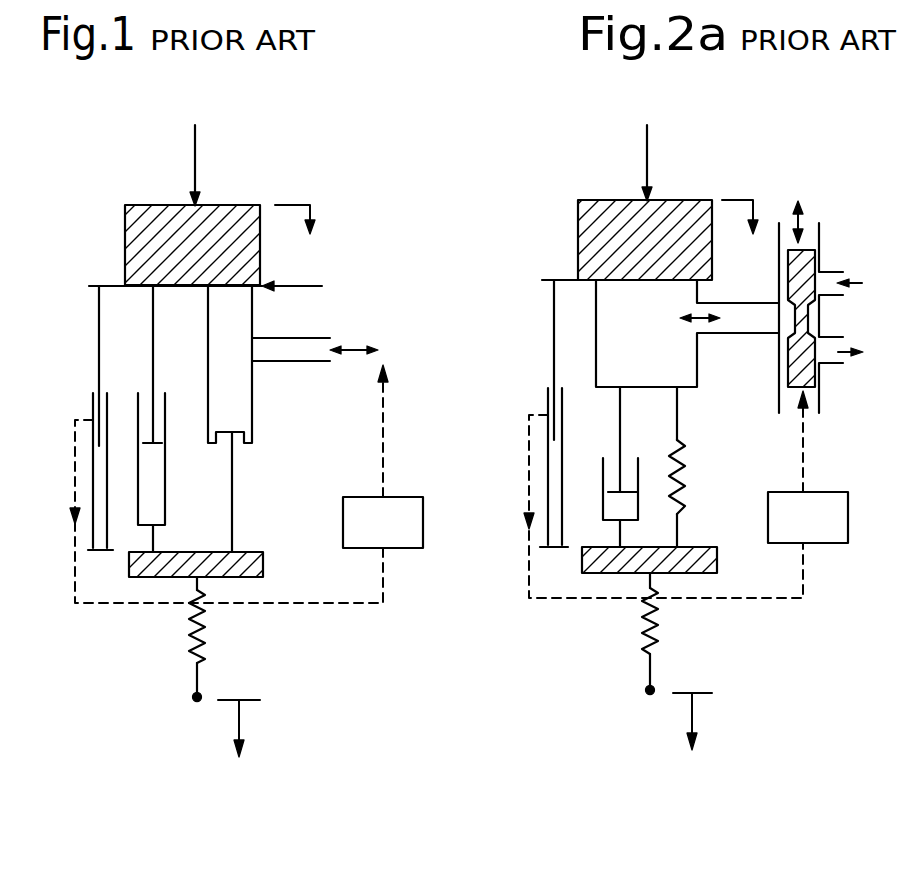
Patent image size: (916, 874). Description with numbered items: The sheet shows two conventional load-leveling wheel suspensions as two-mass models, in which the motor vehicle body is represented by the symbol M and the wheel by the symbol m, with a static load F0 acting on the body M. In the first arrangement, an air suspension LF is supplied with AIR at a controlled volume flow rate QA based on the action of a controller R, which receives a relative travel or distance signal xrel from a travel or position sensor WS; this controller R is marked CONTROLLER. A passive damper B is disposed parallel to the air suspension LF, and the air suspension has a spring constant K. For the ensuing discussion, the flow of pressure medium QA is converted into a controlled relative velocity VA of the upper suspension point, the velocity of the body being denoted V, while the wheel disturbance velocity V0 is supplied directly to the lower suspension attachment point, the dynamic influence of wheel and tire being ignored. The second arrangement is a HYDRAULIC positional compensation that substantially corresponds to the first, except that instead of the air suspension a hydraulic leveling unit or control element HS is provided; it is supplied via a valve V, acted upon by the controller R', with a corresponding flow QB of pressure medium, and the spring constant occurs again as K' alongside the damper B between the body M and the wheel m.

In FIG. 1, the static load force F0 is at (193, 150).
In FIG. 2A, the static load force F0 is at (645, 147).
In FIG. 1, the motor vehicle body M is at (192, 245).
In FIG. 2A, the motor vehicle body M is at (645, 240).
In FIG. 1, the valve V is at (295, 234).
In FIG. 2A, the valve V is at (835, 408).
In FIG. 1, the controlled relative velocity of the upper suspension point VA is at (302, 280).
In FIG. 1, the travel or position sensor WS is at (94, 342).
In FIG. 2A, the travel or position sensor WS is at (547, 337).
In FIG. 1, the relative travel/distance signal xrel is at (79, 457).
In FIG. 2A, the relative travel/distance signal xrel is at (533, 454).
In FIG. 1, the air supply AIR is at (272, 353).
In FIG. 1, the air suspension LF is at (253, 398).
In FIG. 1, the passive damper B is at (165, 480).
In FIG. 2A, the passive damper B is at (638, 505).
In FIG. 1, the spring constant K is at (247, 492).
In FIG. 1, the controlled volume flow rate QA is at (368, 354).
In FIG. 1, the controller R is at (385, 483).
In FIG. 1, the wheel m is at (196, 565).
In FIG. 2A, the wheel m is at (649, 560).
In FIG. 1, the controller CONTROLLER is at (367, 535).
In FIG. 2A, the controller CONTROLLER is at (780, 535).
In FIG. 1, the wheel disturbance velocity V0 is at (242, 734).
In FIG. 2A, the wheel disturbance velocity V0 is at (696, 727).
In FIG. 2A, the hydraulic actuator HYDRAULIC is at (619, 352).
In FIG. 2A, the flow of pressure medium QB is at (672, 319).
In FIG. 2A, the hydraulic leveling unit or control element HS is at (698, 372).
In FIG. 2A, the spring constant K' is at (694, 467).
In FIG. 2A, the controller R' is at (812, 496).